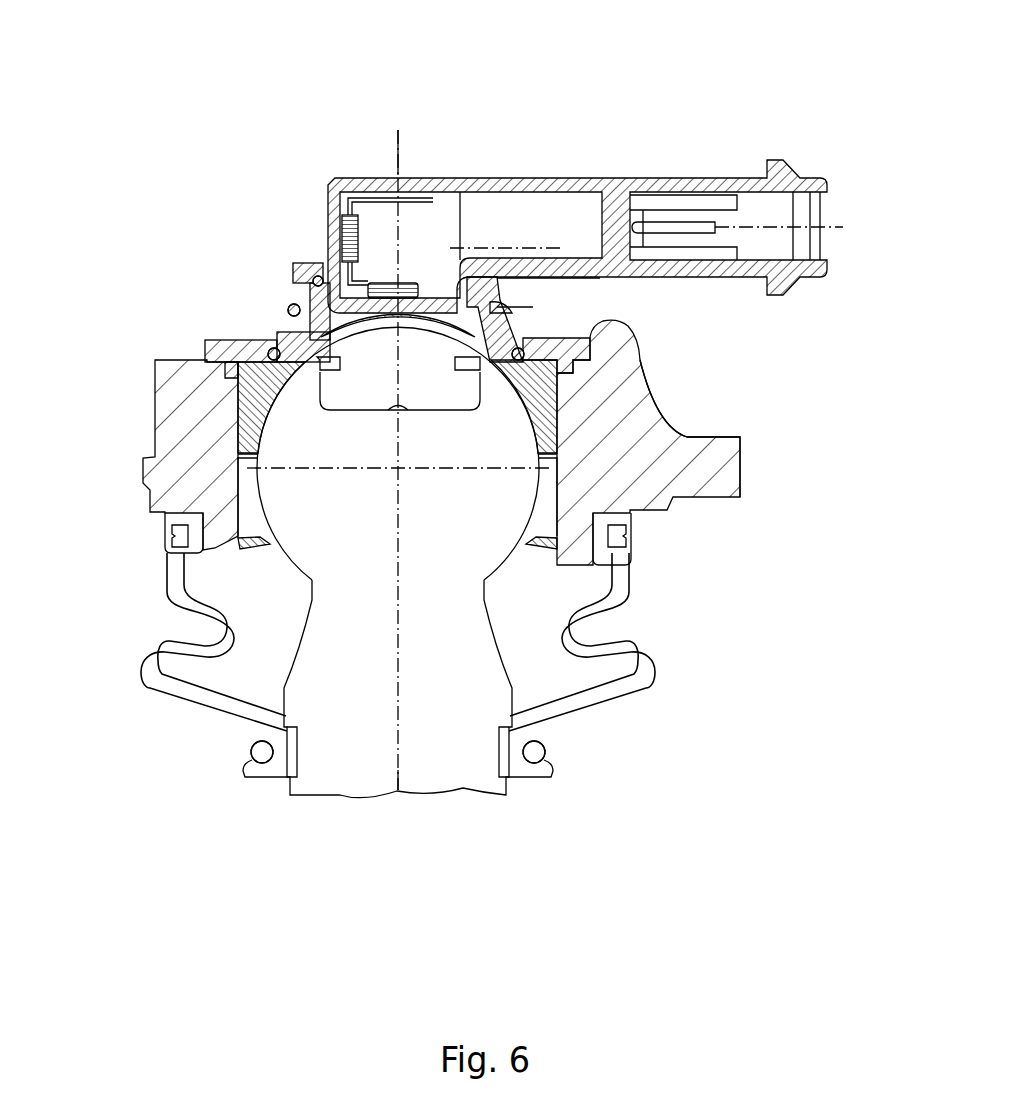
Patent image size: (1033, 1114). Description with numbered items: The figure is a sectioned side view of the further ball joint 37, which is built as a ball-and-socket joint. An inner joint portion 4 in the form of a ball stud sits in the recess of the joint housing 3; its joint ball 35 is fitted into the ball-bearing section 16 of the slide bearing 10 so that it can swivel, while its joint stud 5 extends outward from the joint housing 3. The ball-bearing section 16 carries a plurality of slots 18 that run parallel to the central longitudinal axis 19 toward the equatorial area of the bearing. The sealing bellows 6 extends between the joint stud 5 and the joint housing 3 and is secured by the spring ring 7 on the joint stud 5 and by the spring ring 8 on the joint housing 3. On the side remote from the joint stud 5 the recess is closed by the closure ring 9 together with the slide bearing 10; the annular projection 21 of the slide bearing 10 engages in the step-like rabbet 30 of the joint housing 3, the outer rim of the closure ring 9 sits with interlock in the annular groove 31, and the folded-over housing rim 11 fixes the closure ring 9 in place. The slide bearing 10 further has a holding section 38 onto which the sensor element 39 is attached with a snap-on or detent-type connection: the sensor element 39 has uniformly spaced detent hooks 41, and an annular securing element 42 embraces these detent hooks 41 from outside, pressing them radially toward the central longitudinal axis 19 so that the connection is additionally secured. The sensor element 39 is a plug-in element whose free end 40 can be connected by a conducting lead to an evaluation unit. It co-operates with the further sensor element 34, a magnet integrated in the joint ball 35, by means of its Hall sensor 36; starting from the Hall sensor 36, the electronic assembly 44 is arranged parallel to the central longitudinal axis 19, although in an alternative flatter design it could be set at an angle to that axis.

The joint housing 3 is at (660, 389).
The inner joint portion 4 is at (300, 812).
The joint stud 5 is at (347, 780).
The sealing bellows 6 is at (148, 672).
The spring ring 7 is at (548, 755).
The spring ring 8 is at (628, 540).
The closure ring 9 is at (262, 350).
The slide bearing 10 is at (582, 439).
The housing rim 11 is at (600, 330).
The ball-bearing section 16 is at (220, 466).
The slot 18 is at (553, 487).
The central longitudinal axis 19 is at (403, 790).
The annular projection 21 is at (218, 377).
The rabbet 30 is at (228, 388).
The groove 31 is at (200, 352).
The further sensor element 34 is at (439, 360).
The joint ball 35 is at (307, 545).
The Hall sensor 36 is at (412, 265).
The ball joint 37 is at (141, 208).
The holding section 38 is at (540, 305).
The sensor element 39 is at (549, 124).
The free end 40 is at (845, 188).
The detent hook 41 is at (306, 320).
The securing element 42 is at (285, 306).
The electronic assembly 44 is at (372, 228).